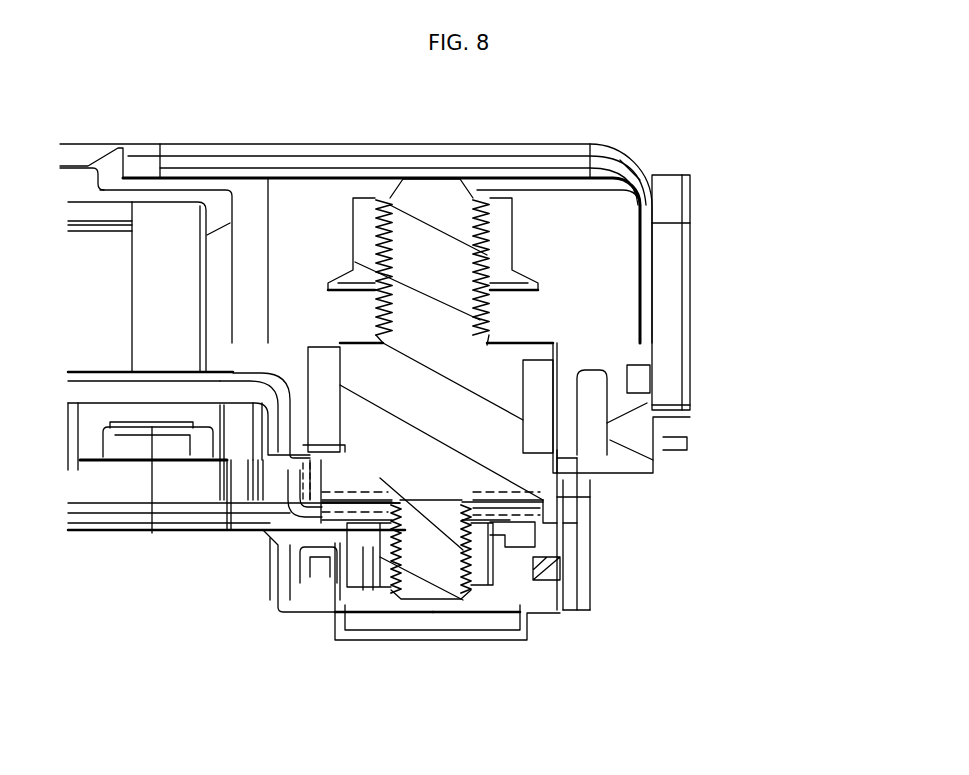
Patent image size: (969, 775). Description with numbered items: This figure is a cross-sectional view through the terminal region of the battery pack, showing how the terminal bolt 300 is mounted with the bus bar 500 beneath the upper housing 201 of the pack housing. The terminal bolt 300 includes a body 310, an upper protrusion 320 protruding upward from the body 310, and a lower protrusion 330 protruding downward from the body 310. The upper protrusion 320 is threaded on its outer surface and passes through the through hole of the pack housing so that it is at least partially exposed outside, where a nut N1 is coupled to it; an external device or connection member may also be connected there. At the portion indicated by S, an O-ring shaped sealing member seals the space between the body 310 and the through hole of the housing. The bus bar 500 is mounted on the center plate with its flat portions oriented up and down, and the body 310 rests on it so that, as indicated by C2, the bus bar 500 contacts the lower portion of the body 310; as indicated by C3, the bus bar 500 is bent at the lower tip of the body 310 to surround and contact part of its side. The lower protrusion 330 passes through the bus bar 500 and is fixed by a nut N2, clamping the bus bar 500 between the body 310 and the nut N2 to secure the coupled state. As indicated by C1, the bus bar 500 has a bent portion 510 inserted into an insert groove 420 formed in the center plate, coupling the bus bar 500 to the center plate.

The upper housing 201 is at (628, 156).
The terminal bolt 300 is at (785, 236).
The body 310 is at (453, 373).
The upper protrusion 320 is at (450, 237).
The lower protrusion 330 is at (572, 528).
The insert groove 420 is at (538, 613).
The bus bar 500 is at (272, 543).
The bent portion 510 is at (560, 583).
The nut N1 is at (365, 225).
The nut N2 is at (384, 572).
The sealing member position S is at (338, 372).
The bus bar insertion portion C1 is at (580, 527).
The lower contact portion C2 is at (471, 482).
The side contact portion C3 is at (325, 466).